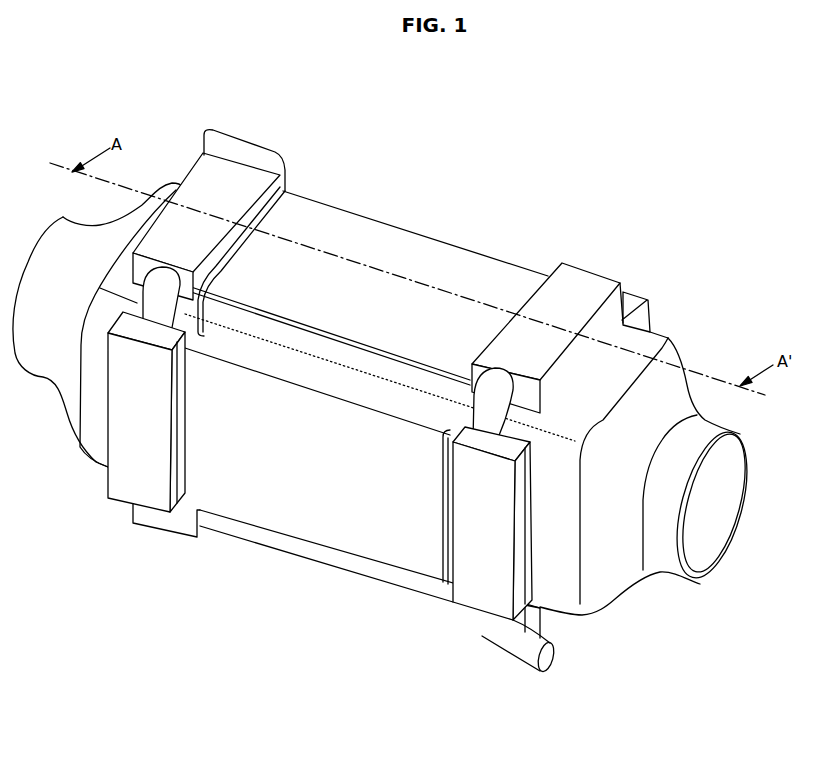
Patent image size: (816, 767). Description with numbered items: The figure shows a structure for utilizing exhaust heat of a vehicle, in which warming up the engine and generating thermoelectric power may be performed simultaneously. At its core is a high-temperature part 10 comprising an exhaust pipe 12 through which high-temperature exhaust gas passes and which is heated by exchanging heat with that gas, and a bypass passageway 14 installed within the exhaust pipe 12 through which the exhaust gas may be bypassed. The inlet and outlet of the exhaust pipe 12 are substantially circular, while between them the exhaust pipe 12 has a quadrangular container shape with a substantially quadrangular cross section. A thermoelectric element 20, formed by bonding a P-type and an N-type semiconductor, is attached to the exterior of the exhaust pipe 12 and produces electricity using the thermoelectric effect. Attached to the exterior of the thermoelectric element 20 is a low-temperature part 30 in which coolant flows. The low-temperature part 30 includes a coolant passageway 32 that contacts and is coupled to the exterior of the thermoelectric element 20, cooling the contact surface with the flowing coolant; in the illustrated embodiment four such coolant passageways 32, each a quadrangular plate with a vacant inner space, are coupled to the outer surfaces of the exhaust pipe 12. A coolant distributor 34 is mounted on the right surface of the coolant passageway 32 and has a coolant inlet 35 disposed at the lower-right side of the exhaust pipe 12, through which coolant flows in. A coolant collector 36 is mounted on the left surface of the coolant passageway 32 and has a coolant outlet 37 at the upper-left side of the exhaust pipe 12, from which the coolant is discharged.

The high-temperature part 10 is at (650, 539).
The exhaust pipe 12 is at (617, 570).
The bypass passageway 14 is at (703, 543).
The thermoelectric element 20 is at (280, 320).
The low-temperature part 30 is at (356, 398).
The coolant passageway 32 is at (300, 507).
The coolant distributor 34 is at (427, 558).
The coolant inlet 35 is at (493, 627).
The coolant collector 36 is at (143, 480).
The coolant outlet 37 is at (227, 133).